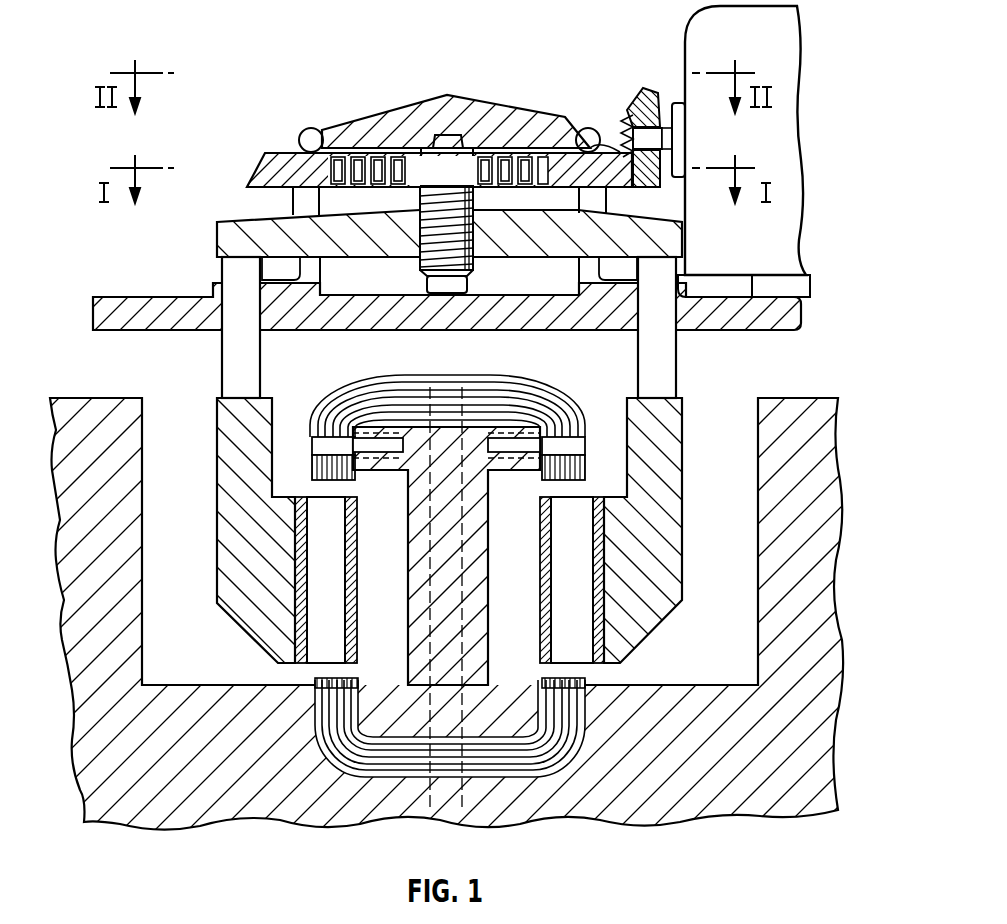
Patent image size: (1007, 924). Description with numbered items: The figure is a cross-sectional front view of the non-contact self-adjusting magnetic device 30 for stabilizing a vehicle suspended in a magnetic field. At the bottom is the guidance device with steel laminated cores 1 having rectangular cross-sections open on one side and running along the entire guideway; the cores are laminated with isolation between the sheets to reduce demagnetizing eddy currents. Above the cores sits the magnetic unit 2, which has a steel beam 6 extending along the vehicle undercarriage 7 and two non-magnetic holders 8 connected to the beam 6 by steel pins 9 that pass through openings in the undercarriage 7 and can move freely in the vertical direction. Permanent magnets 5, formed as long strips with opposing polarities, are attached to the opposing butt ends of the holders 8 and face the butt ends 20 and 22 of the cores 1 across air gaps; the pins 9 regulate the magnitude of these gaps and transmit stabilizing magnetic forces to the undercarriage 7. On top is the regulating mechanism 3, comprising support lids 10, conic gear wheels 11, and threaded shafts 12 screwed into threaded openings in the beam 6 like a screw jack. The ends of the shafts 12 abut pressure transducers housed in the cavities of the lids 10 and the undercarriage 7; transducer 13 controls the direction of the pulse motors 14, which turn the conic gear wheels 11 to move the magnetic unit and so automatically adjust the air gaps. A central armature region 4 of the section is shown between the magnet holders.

The laminated cores 1 is at (557, 408).
The magnetic unit 2 is at (672, 435).
The regulating mechanism 3 is at (632, 108).
The armature 4 is at (473, 693).
The permanent magnets 5 is at (328, 568).
The steel beam 6 is at (250, 237).
The undercarriage 7 is at (173, 303).
The non-magnetic holders 8 is at (482, 525).
The steel pins 9 is at (245, 354).
The support lids 10 is at (308, 143).
The conic gear wheels 11 is at (287, 167).
The shafts 12 is at (470, 194).
The transducer 13 is at (440, 136).
The pulse motors 14 is at (690, 44).
The butt end 20 is at (355, 673).
The butt end 22 is at (350, 490).
The non-contact self-adjusting magnetic device 30 is at (120, 257).